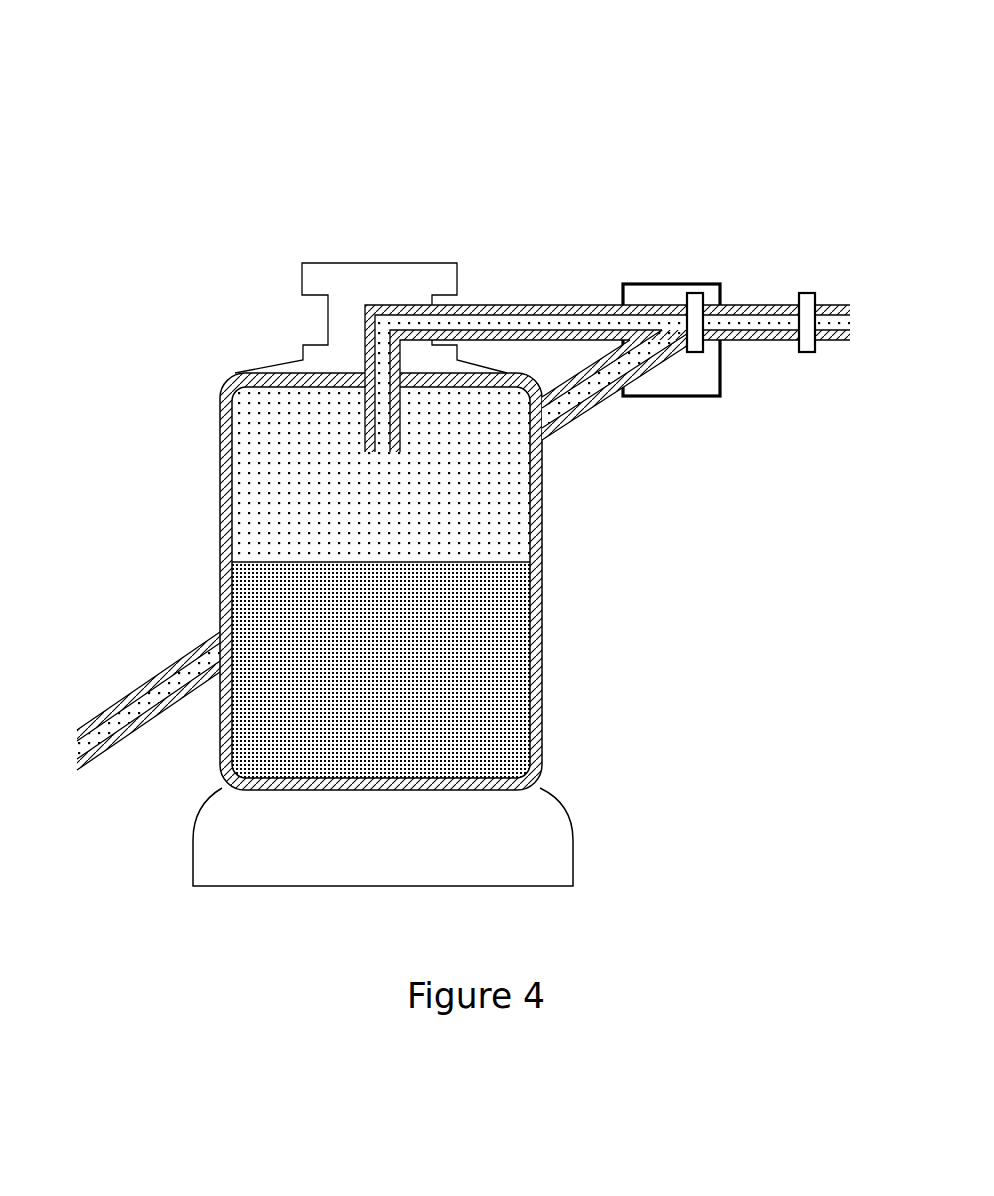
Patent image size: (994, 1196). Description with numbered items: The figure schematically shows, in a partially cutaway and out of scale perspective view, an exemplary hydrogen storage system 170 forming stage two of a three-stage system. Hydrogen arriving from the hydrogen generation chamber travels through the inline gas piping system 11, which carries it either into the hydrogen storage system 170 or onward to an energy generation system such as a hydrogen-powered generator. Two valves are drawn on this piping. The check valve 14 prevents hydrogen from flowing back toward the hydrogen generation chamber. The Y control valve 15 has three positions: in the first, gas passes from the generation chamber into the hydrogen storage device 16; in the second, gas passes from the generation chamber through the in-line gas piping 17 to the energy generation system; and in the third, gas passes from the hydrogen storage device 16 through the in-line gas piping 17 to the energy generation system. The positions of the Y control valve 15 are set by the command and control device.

The hydrogen storage system 170 is at (419, 143).
The hydrogen storage device 16 is at (201, 443).
The in-line gas piping 17 is at (143, 655).
The check valve 14 is at (800, 273).
The Y control valve 15 is at (706, 418).
The inline gas piping system 11 is at (834, 361).